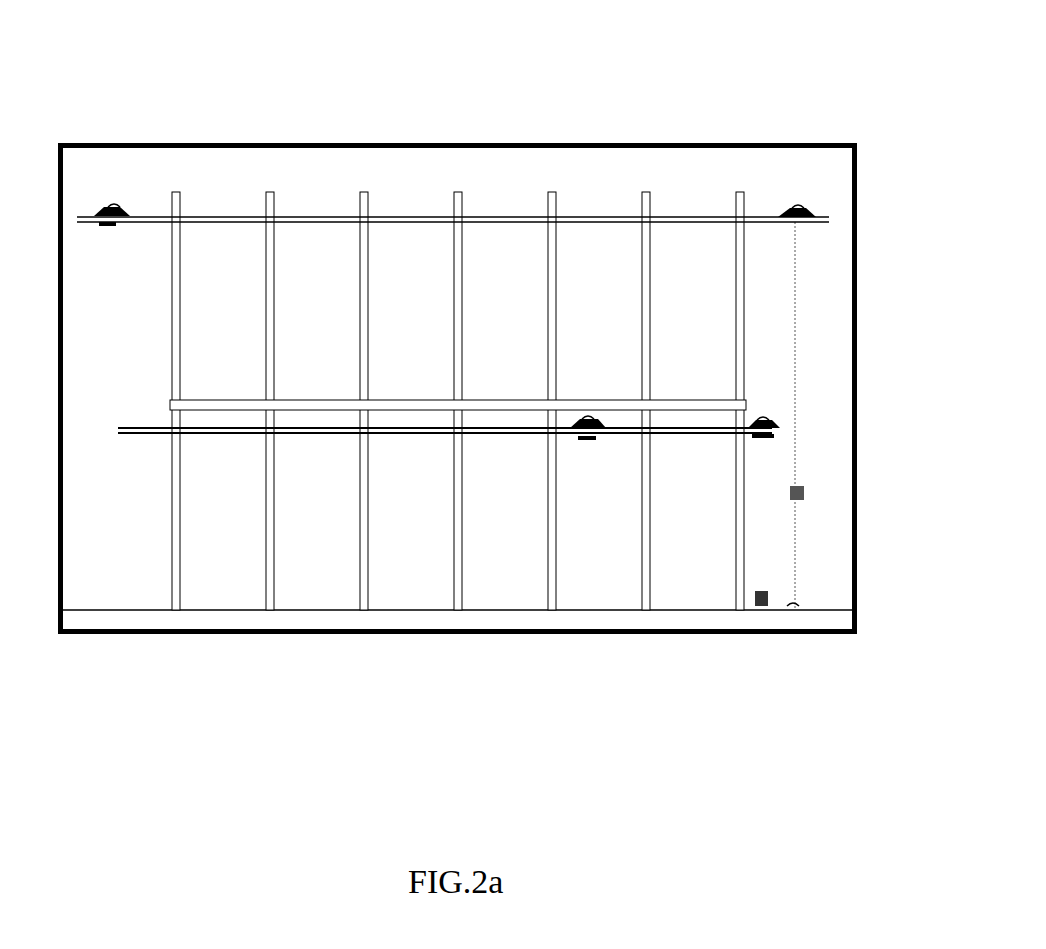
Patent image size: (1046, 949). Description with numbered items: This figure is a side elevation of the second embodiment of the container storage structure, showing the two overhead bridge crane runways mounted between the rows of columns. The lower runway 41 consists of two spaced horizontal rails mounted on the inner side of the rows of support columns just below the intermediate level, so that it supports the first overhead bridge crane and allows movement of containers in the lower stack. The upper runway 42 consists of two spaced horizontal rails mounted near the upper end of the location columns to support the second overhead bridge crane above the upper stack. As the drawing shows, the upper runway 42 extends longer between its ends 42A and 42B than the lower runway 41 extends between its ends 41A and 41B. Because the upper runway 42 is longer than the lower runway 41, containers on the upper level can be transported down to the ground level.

The lower runway 41 is at (426, 454).
The end of lower runway 41A is at (154, 440).
The end of lower runway 41B is at (766, 451).
The upper runway 42 is at (430, 202).
The end of upper runway 42A is at (133, 196).
The end of upper runway 42B is at (763, 190).